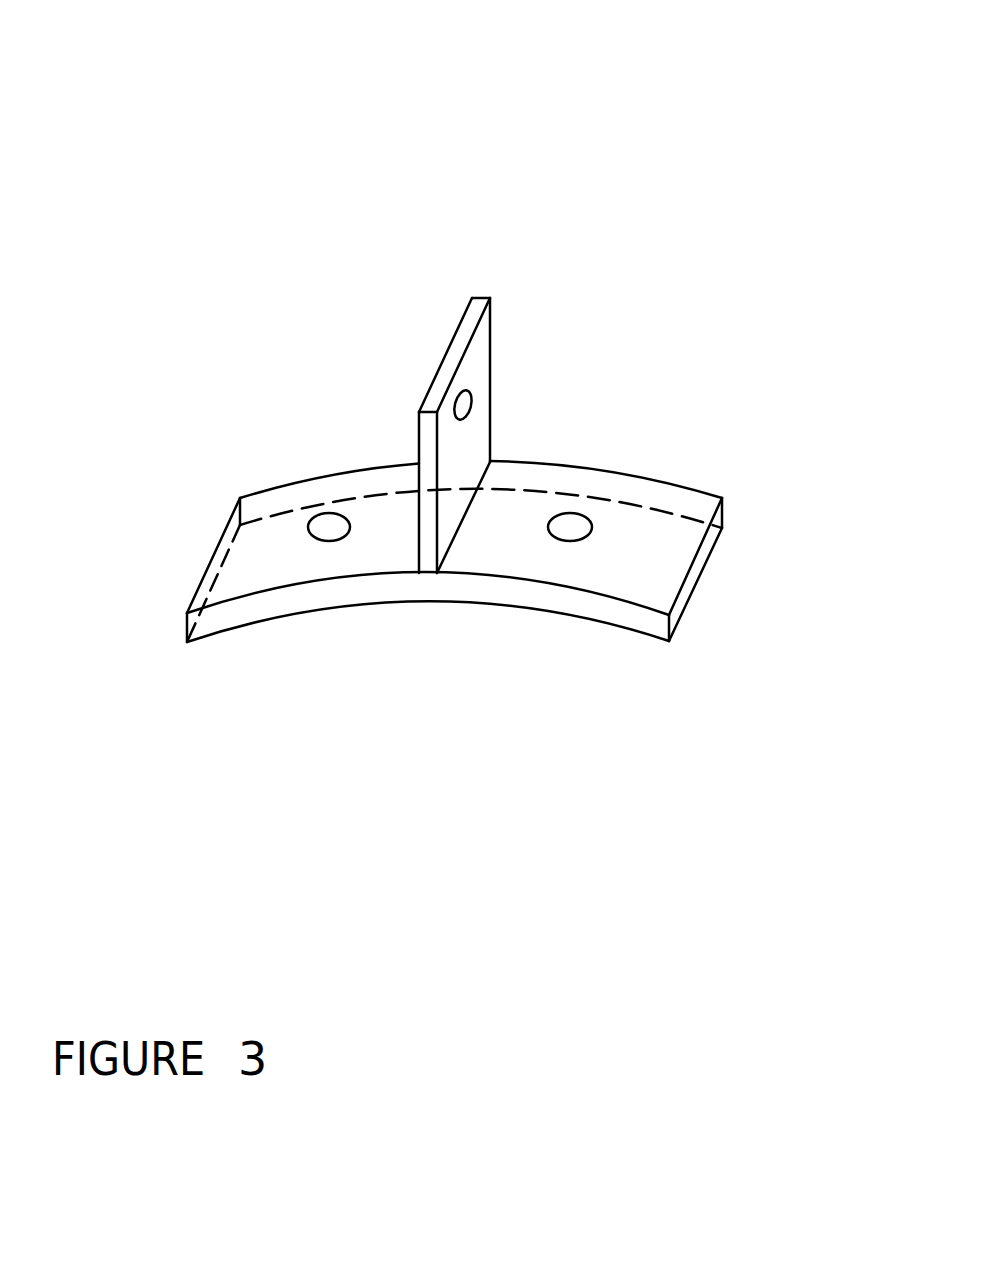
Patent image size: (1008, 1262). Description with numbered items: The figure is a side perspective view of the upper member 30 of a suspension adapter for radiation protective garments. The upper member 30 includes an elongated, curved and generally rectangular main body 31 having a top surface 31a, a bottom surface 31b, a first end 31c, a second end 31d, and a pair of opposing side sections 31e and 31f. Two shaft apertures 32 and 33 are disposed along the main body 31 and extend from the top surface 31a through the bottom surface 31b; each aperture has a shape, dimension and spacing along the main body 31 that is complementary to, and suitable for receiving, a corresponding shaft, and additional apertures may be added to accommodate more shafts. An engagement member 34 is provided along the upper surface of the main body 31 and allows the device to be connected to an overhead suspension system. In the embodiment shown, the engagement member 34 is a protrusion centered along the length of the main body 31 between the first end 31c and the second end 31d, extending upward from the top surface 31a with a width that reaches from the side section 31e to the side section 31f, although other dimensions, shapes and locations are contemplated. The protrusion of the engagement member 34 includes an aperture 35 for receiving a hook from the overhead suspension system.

The upper member 30 is at (154, 92).
The main body 31 is at (134, 617).
The top surface 31a is at (665, 569).
The bottom surface 31b is at (413, 640).
The first end 31c is at (215, 568).
The second end 31d is at (693, 570).
The side section 31e is at (585, 603).
The side section 31f is at (702, 500).
The shaft aperture 32 is at (327, 527).
The shaft aperture 33 is at (570, 527).
The engagement member 34 is at (477, 461).
The aperture 35 is at (462, 407).